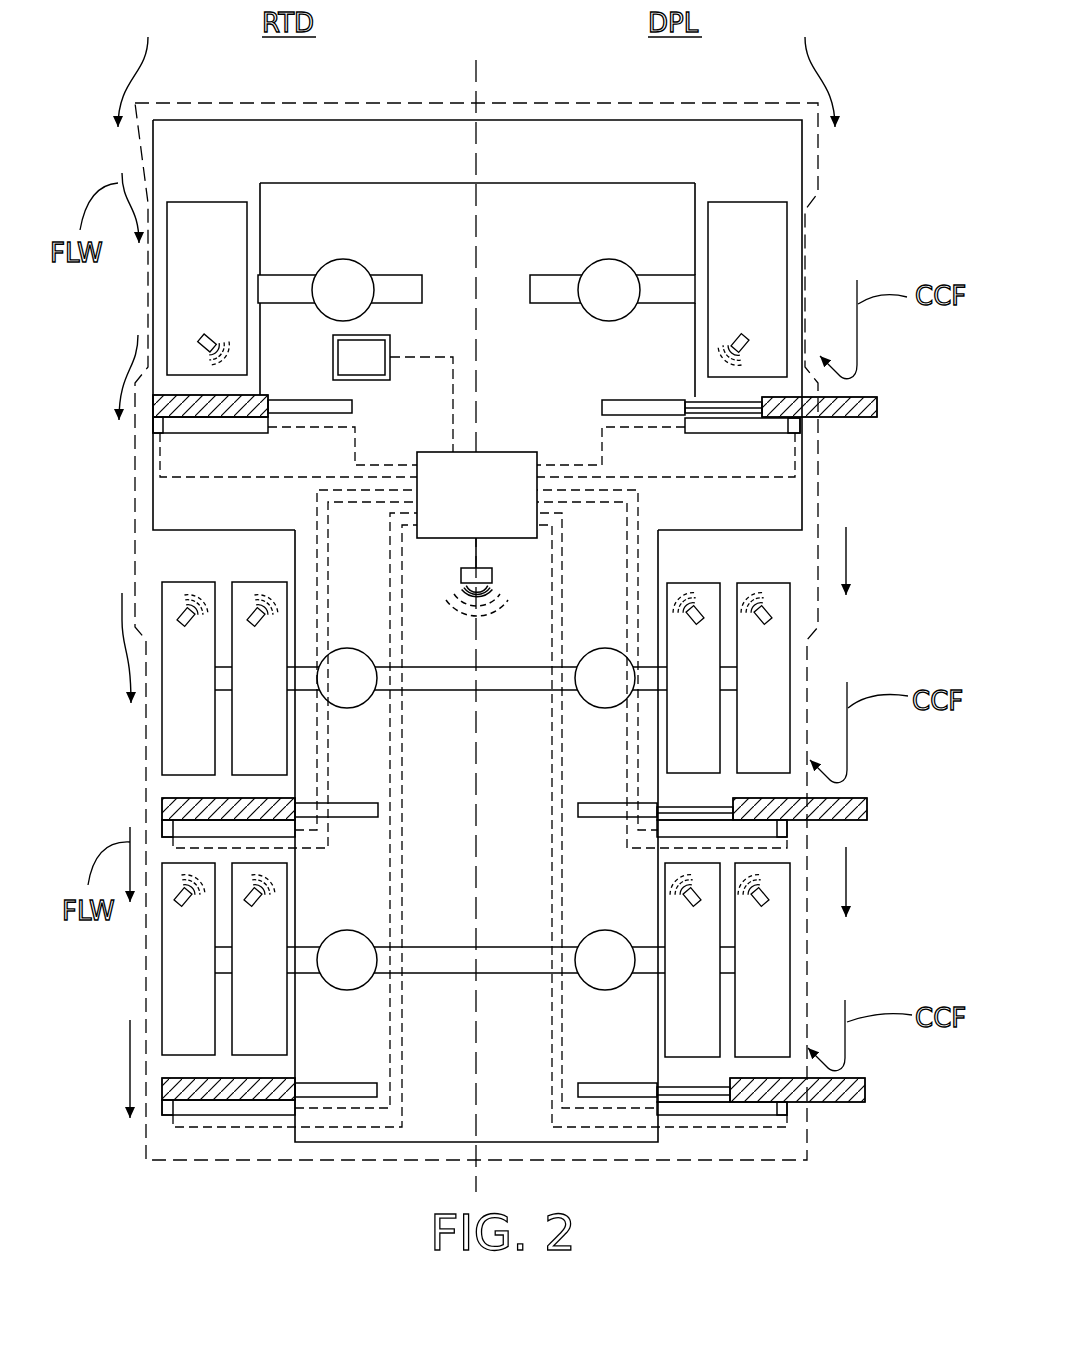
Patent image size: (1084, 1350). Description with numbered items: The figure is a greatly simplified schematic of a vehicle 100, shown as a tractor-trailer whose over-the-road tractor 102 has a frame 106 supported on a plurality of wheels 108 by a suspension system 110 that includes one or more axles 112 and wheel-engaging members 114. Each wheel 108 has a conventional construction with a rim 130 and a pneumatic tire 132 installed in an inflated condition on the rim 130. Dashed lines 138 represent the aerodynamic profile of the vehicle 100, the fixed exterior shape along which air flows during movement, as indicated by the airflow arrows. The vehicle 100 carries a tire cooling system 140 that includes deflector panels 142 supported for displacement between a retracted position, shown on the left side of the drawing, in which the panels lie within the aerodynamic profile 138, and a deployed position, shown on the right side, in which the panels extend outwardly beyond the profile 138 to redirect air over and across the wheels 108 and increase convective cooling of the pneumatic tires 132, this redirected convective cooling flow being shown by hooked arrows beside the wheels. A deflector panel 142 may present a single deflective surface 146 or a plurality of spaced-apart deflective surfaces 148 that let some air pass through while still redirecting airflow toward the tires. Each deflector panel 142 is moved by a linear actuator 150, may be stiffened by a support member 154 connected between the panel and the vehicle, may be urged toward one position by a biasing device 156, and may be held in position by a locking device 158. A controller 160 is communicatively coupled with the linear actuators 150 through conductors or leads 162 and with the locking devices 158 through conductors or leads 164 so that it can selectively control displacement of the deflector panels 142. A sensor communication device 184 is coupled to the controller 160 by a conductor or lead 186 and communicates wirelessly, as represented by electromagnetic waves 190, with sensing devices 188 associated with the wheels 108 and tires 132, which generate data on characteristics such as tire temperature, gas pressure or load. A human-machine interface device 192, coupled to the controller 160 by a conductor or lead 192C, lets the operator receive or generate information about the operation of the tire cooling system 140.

The vehicle 100 is at (882, 97).
The tractor 102 is at (862, 196).
The frame 106 is at (380, 1144).
The wheel 108 is at (417, 602).
The rim 130 is at (417, 602).
The pneumatic tire 132 is at (242, 214).
The suspension system 110 is at (292, 130).
The axle 112 is at (440, 692).
The wheel-engaging member 114 is at (290, 286).
The aerodynamic profile 138 is at (450, 102).
The tire cooling system 140 is at (842, 252).
The deflector panel 142 is at (190, 420).
The deflective surface 146 is at (860, 393).
The deflective surfaces 148 is at (190, 410).
The linear actuator 150 is at (233, 430).
The support member 154 is at (720, 407).
The biasing device 156 is at (340, 405).
The locking device 158 is at (158, 427).
The controller 160 is at (500, 511).
The conductors or leads 162 is at (358, 441).
The conductors or leads 164 is at (200, 480).
The sensor communication device 184 is at (495, 576).
The conductor or lead 186 is at (470, 553).
The sensing device 188 is at (253, 619).
The electromagnetic waves 190 is at (250, 588).
The human-machine interface device 192 is at (372, 336).
The conductor or lead 192C is at (443, 355).